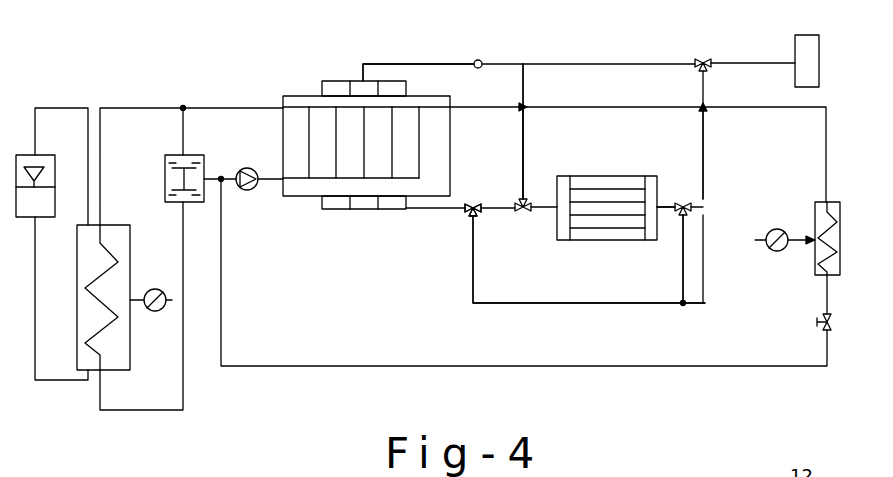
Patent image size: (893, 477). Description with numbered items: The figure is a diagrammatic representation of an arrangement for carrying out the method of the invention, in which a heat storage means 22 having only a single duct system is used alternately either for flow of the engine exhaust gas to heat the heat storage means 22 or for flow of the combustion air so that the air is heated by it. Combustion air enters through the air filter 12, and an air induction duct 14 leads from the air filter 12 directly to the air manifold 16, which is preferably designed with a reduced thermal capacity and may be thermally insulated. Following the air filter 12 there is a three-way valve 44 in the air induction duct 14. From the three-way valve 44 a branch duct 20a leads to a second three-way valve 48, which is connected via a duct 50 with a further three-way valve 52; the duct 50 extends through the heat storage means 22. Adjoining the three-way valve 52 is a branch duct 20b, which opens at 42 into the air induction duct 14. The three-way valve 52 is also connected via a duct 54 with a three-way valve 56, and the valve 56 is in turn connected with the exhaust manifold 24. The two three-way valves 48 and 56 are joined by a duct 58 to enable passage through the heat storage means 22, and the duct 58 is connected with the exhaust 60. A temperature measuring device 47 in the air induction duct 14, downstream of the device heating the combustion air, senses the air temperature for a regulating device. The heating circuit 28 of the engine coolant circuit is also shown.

The air filter 12 is at (795, 52).
The air induction duct 14 is at (408, 63).
The air manifold 16 is at (322, 85).
The branch duct 20a is at (704, 178).
The branch duct 20b is at (521, 140).
The heat storage means 22 is at (608, 233).
The exhaust manifold 24 is at (337, 212).
The heating circuit 28 is at (781, 108).
The opening into air induction duct 42 is at (524, 63).
The three-way valve 44 is at (697, 66).
The temperature measuring device 47 is at (478, 59).
The second three-way valve 48 is at (679, 205).
The duct 50 is at (663, 215).
The further three-way valve 52 is at (527, 201).
The duct 54 is at (477, 205).
The three-way valve 56 is at (466, 209).
The duct 58 is at (503, 305).
The exhaust 60 is at (704, 304).